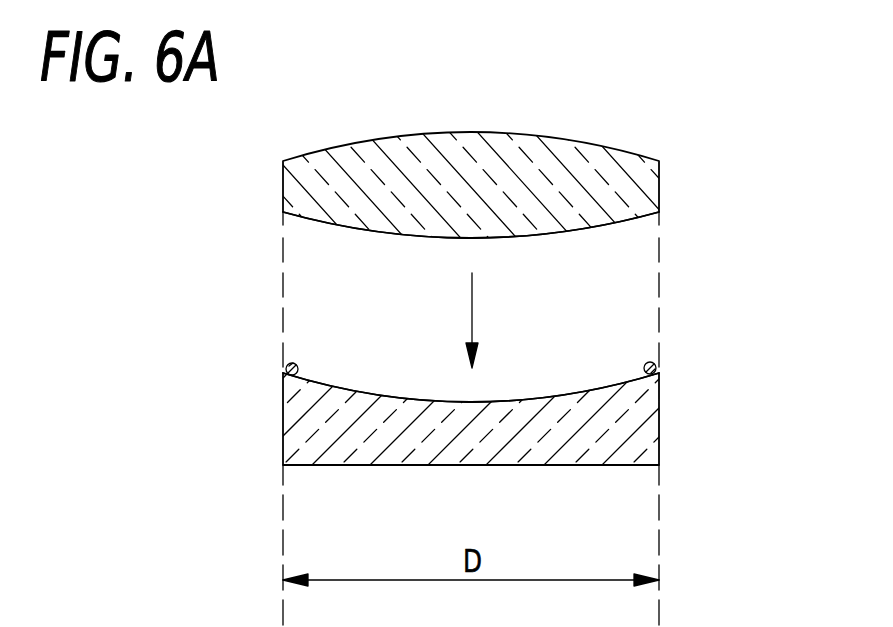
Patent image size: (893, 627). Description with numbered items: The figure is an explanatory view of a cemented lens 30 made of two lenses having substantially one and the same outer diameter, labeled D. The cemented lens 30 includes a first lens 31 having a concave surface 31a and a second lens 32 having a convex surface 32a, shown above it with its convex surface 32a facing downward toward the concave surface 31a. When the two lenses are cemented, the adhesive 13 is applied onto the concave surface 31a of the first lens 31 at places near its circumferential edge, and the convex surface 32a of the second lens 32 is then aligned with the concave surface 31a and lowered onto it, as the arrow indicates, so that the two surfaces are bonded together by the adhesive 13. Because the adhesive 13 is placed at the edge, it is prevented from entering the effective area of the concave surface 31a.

The cemented lens 30 is at (655, 118).
The second lens 32 is at (428, 133).
The convex surface 32a is at (557, 240).
The first lens 31 is at (645, 437).
The concave surface 31a is at (368, 392).
The adhesive 13 is at (291, 362).